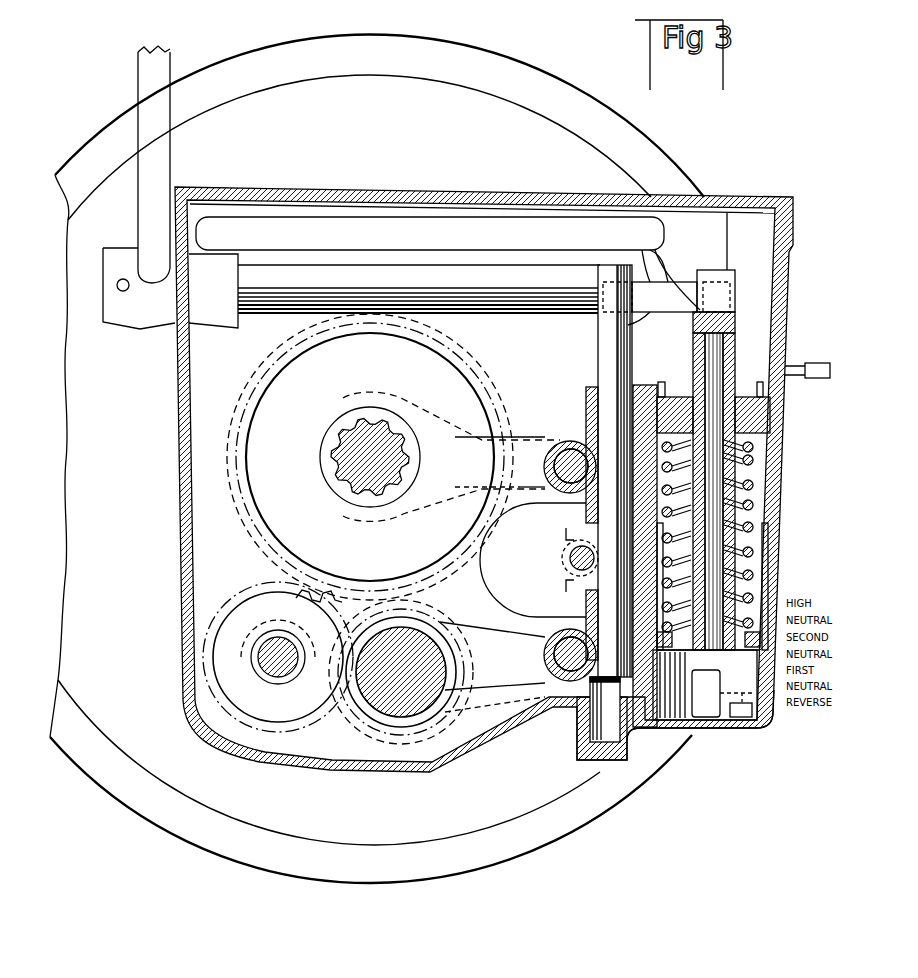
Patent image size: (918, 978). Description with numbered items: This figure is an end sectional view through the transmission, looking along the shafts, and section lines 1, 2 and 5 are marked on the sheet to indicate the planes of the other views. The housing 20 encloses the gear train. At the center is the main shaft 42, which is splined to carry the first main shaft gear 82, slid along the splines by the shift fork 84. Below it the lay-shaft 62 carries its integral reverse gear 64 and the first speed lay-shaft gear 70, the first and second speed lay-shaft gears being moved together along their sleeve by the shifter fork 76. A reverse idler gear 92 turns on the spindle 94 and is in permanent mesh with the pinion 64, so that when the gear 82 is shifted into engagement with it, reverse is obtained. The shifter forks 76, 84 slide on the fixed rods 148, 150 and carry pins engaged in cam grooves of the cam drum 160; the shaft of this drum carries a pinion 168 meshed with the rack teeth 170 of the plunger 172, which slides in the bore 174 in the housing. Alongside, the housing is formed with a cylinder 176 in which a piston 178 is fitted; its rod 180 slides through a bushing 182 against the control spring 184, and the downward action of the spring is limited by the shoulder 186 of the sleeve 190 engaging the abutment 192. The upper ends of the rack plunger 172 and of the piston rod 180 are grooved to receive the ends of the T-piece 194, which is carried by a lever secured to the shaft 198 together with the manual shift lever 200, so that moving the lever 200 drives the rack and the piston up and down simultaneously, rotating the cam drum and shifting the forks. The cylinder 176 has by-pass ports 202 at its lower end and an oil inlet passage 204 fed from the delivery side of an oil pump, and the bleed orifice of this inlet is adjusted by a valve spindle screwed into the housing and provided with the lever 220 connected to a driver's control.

The section line 1 is at (355, 897).
The section line 2 is at (205, 457).
The section line 5 is at (580, 70).
The housing 20 is at (178, 538).
The main shaft 42 is at (330, 468).
The lay-shaft 62 is at (405, 700).
The reverse gear 64 is at (372, 716).
The first speed lay-shaft gear 70 is at (478, 710).
The shifter fork 76 is at (487, 635).
The first main shaft gear 82 is at (487, 379).
The shift fork 84 is at (540, 439).
The reverse idler gear 92 is at (255, 605).
The spindle 94 is at (258, 662).
The fixed rod 148 is at (543, 660).
The fixed rod 150 is at (566, 445).
The cam drum 160 is at (535, 580).
The pinion 168 is at (568, 558).
The rack teeth 170 is at (577, 556).
The plunger 172 is at (607, 352).
The bore 174 is at (610, 725).
The cylinder 176 is at (760, 447).
The piston 178 is at (705, 685).
The rod 180 is at (736, 314).
The bushing 182 is at (775, 418).
The control spring 184 is at (768, 502).
The shoulder 186 is at (755, 530).
The sleeve 190 is at (758, 548).
The abutment 192 is at (755, 562).
The T-piece 194 is at (660, 290).
The shaft 198 is at (372, 272).
The manual shift lever 200 is at (160, 62).
The by-pass ports 202 is at (773, 725).
The oil inlet passage 204 is at (742, 718).
The lever 220 is at (822, 363).